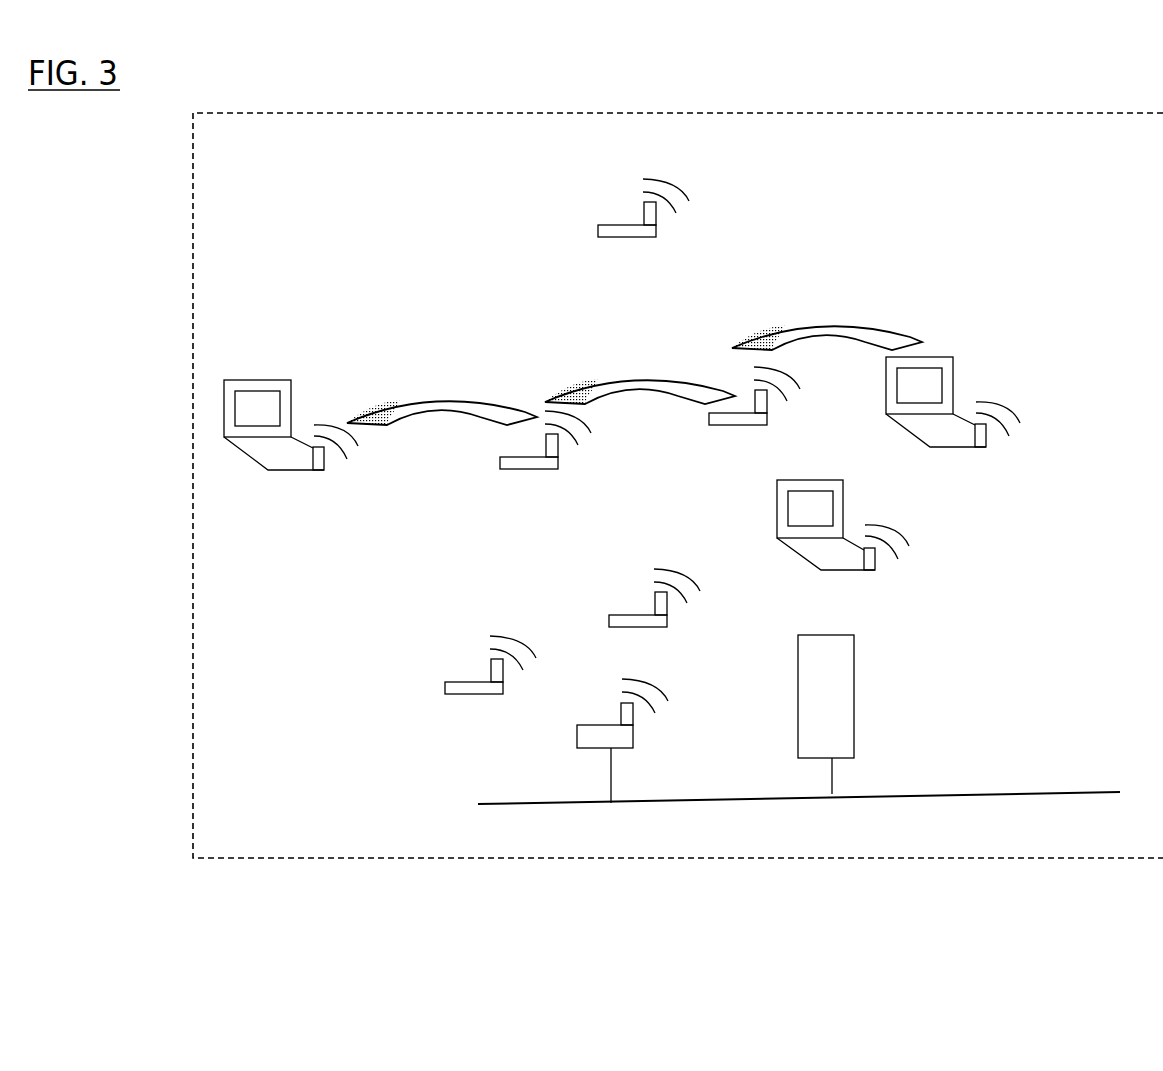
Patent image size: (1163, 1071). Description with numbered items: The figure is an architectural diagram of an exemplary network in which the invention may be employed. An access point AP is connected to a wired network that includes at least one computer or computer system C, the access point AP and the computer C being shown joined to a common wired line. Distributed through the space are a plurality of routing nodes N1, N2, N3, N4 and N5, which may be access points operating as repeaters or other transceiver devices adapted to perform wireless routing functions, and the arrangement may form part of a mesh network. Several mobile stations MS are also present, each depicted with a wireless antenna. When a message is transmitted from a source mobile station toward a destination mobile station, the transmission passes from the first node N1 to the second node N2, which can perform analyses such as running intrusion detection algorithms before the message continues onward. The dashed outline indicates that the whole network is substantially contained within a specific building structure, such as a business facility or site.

The mobile station MS is at (843, 525).
The first node N1 is at (536, 413).
The second node N2 is at (729, 419).
The routing node N3 is at (628, 197).
The routing node N4 is at (486, 656).
The routing node N5 is at (654, 592).
The access point AP is at (627, 741).
The computer or computer system C is at (826, 714).